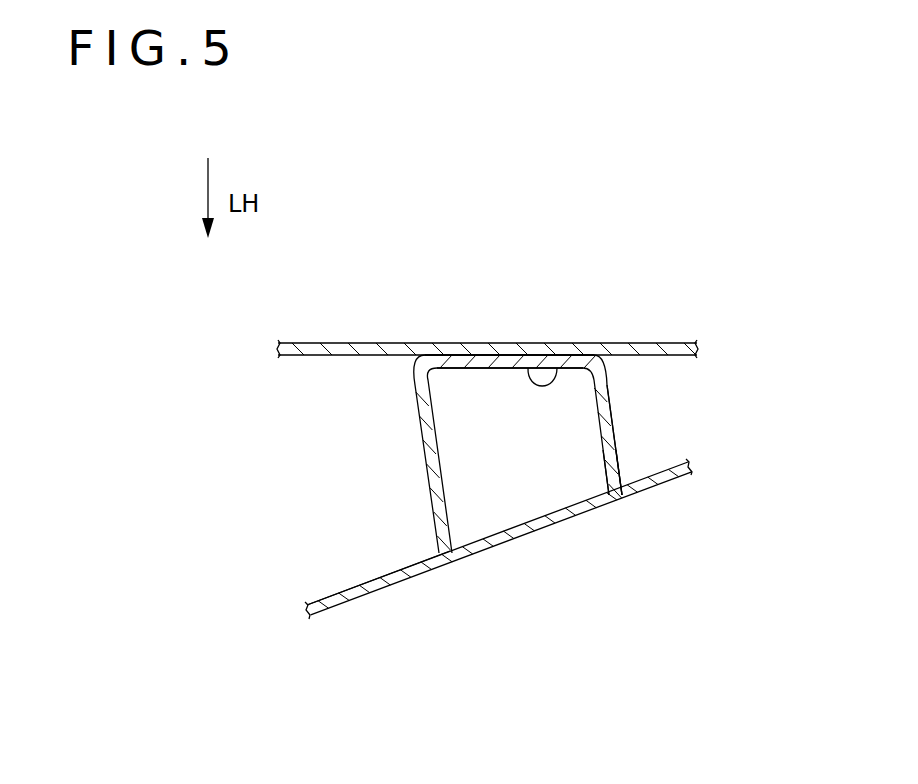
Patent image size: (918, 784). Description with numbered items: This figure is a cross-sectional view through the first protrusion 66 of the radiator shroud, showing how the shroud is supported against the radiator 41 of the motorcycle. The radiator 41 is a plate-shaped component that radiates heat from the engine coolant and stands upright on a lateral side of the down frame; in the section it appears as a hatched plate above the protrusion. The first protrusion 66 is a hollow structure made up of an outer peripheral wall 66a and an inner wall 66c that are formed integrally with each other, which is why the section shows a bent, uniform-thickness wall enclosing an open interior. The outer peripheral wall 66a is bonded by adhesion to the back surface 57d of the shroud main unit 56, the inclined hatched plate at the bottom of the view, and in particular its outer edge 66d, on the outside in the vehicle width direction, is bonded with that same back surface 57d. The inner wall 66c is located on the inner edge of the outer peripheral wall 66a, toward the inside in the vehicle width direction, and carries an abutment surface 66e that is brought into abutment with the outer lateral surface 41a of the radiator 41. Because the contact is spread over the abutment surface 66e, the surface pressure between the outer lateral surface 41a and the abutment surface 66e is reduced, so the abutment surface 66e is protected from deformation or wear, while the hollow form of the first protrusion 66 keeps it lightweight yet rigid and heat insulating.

The radiator 41 is at (317, 361).
The outer lateral surface of the radiator 41a is at (547, 384).
The shroud main unit 56 is at (377, 600).
The back surface of the shroud main unit 57d is at (337, 593).
The first protrusion 66 is at (408, 442).
The outer peripheral wall 66a is at (611, 423).
The inner wall 66c is at (481, 378).
The outer edge 66d is at (618, 482).
The abutment surface 66e is at (503, 356).